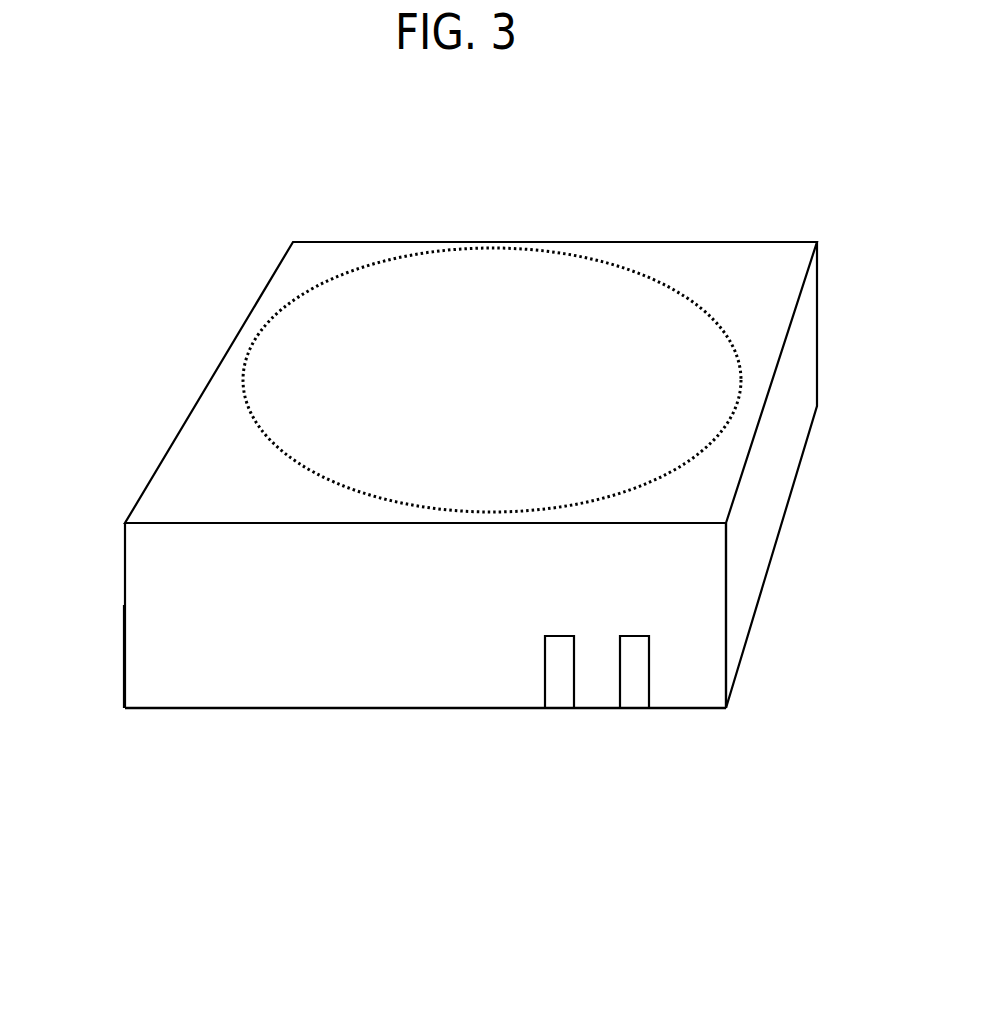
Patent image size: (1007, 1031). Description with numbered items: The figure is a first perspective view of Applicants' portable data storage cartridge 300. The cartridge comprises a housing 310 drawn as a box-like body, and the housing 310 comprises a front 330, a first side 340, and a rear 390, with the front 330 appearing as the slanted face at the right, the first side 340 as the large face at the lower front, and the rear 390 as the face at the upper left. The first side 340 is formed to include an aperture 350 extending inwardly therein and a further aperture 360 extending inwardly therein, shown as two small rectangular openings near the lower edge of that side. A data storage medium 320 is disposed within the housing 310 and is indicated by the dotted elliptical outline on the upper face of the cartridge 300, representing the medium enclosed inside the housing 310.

The portable data storage cartridge 300 is at (474, 573).
The housing 310 is at (255, 709).
The data storage medium 320 is at (501, 390).
The front 330 is at (778, 467).
The first side 340 is at (440, 626).
The aperture 350 is at (557, 690).
The aperture 360 is at (632, 687).
The rear 390 is at (160, 462).